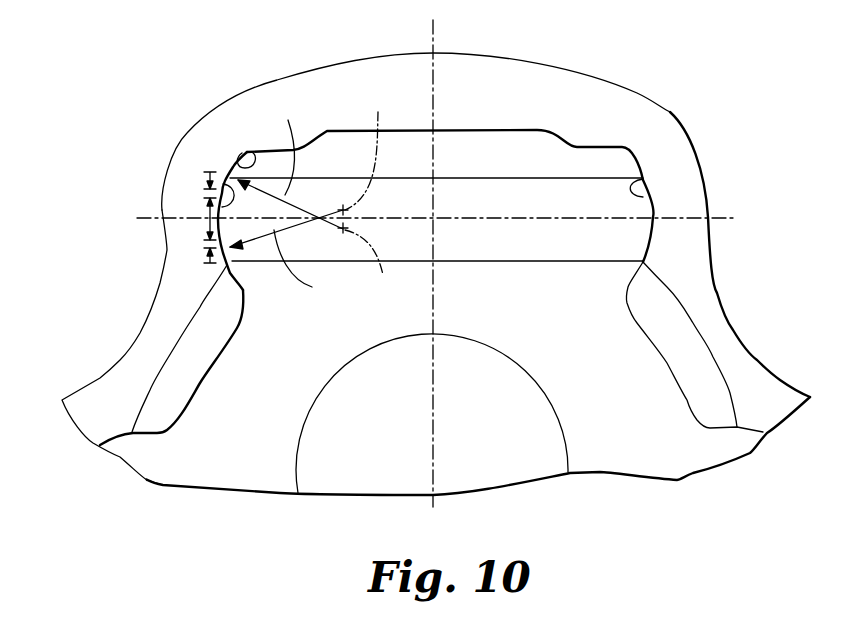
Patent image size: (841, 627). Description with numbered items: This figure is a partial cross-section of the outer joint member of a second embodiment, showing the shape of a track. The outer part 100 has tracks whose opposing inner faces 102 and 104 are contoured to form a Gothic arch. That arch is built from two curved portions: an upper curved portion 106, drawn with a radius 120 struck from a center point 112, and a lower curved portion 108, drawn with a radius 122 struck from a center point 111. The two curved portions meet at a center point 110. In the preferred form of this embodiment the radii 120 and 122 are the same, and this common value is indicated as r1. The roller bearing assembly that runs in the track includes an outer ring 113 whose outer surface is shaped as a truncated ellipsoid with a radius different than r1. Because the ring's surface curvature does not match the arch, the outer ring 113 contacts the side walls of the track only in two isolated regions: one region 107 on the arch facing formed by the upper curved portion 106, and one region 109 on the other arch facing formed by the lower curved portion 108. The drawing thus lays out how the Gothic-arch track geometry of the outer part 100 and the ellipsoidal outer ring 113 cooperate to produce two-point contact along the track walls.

The outer part 100 is at (637, 93).
The inner face 102 is at (208, 171).
The inner face 104 is at (643, 177).
The upper curved portion 106 is at (250, 151).
The contact region 107 is at (206, 185).
The lower curved portion 108 is at (235, 258).
The contact region 109 is at (210, 262).
The center point 110 is at (207, 199).
The center point 111 is at (374, 151).
The center point 112 is at (374, 264).
The outer ring 113 is at (351, 178).
The radius 120 is at (276, 145).
The radius 122 is at (305, 267).
The radius r1 is at (331, 209).